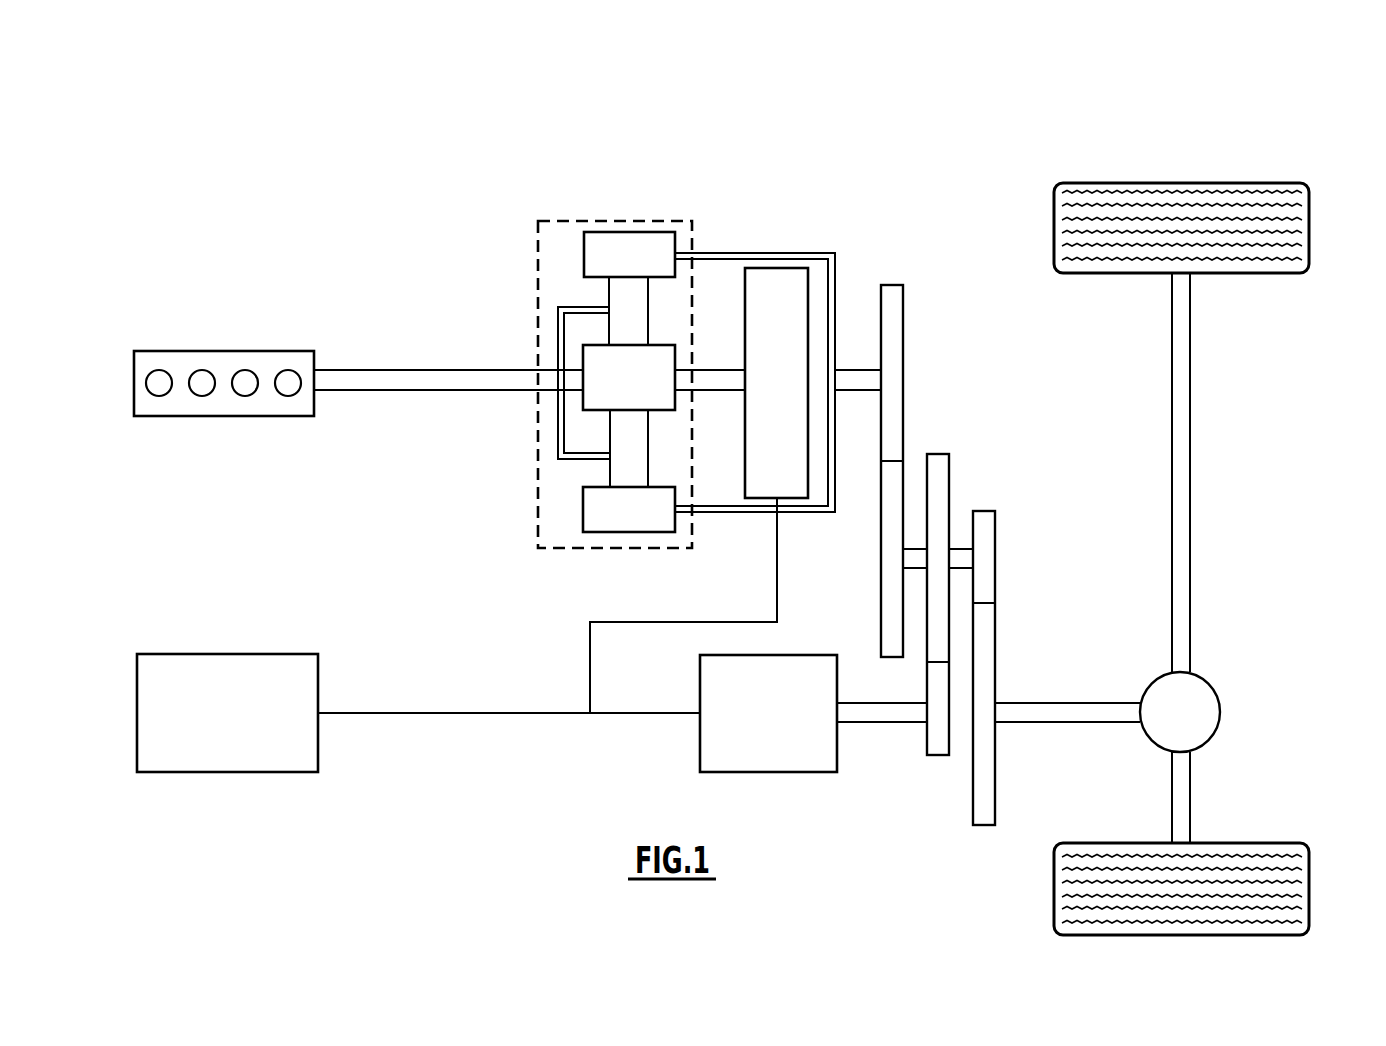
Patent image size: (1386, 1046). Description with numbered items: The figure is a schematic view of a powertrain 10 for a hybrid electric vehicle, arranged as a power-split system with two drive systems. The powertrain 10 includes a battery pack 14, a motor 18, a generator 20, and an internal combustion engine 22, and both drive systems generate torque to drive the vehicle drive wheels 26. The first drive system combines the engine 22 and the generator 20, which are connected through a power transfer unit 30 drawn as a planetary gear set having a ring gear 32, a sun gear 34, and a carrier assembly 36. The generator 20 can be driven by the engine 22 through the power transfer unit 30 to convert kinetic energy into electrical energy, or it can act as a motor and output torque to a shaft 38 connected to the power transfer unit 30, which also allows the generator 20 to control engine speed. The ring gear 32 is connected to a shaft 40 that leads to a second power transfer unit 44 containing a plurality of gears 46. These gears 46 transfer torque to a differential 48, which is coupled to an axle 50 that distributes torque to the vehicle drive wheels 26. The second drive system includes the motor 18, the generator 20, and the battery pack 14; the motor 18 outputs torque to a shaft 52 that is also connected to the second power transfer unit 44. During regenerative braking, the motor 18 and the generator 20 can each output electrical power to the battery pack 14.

The powertrain 10 is at (1081, 126).
The battery pack 14 is at (155, 654).
The motor 18 is at (837, 753).
The generator 20 is at (776, 268).
The internal combustion engine 22 is at (152, 351).
The vehicle drive wheels 26 is at (1309, 888).
The power transfer unit 30 is at (535, 505).
The ring gear 32 is at (584, 255).
The sun gear 34 is at (584, 353).
The carrier assembly 36 is at (557, 444).
The shaft 38 is at (712, 368).
The shaft 40 is at (857, 369).
The second power transfer unit 44 is at (973, 418).
The gears 46 is at (951, 477).
The differential 48 is at (1217, 733).
The axle 50 is at (1190, 462).
The shaft 52 is at (893, 722).